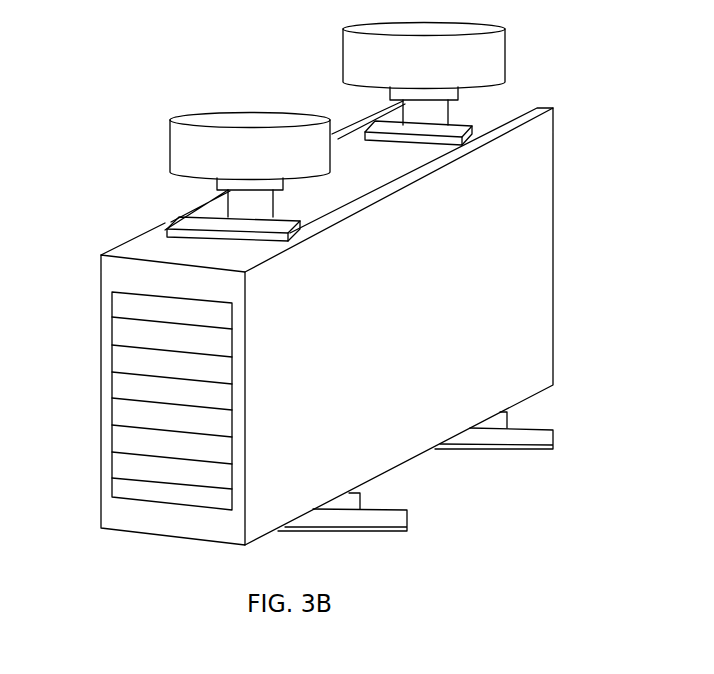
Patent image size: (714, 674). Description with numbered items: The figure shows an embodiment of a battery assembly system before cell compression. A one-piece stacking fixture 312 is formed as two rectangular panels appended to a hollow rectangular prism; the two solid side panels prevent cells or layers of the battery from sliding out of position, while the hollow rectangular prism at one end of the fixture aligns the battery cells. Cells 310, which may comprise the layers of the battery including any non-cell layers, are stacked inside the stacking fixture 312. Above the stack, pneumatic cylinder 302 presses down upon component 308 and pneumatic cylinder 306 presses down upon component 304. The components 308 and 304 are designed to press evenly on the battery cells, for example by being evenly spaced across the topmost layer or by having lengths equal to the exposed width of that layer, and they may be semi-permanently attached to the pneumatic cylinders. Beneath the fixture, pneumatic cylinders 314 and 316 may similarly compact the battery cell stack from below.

The pneumatic cylinder 302 is at (343, 63).
The component 304 is at (347, 123).
The pneumatic cylinder 306 is at (170, 147).
The component 308 is at (167, 224).
The cells 310 is at (119, 348).
The stacking fixture 312 is at (373, 348).
The pneumatic cylinder 314 is at (408, 527).
The pneumatic cylinder 316 is at (555, 445).